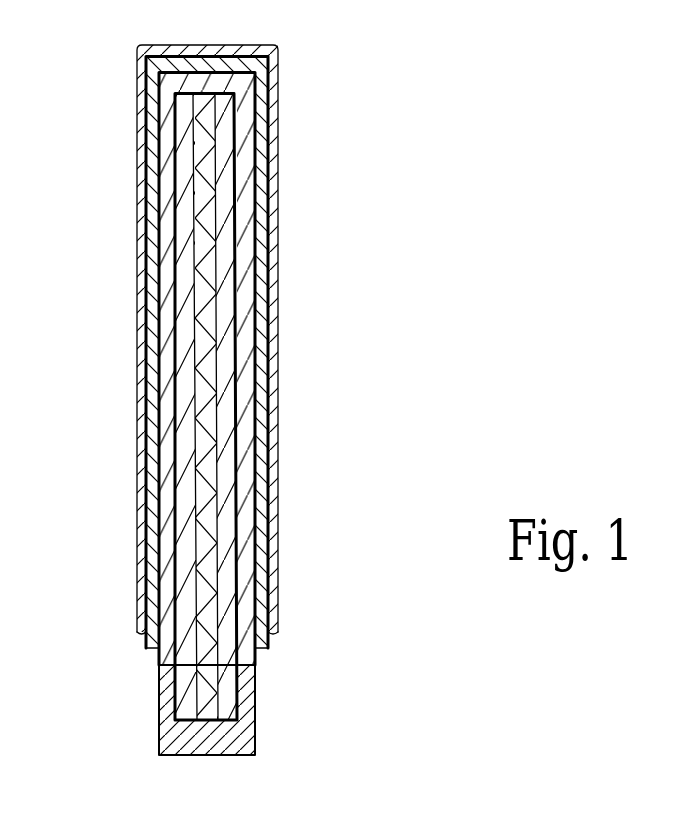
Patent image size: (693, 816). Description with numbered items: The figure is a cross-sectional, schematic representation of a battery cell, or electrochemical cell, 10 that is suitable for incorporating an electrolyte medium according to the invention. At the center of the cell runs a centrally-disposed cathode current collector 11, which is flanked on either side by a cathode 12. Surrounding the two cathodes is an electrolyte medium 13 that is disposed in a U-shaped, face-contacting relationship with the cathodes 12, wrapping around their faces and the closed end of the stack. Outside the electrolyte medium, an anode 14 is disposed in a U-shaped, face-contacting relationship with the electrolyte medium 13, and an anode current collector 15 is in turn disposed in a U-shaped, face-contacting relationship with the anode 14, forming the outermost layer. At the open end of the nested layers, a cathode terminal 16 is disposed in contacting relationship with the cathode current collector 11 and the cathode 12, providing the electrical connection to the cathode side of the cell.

The battery cell 10 is at (413, 85).
The cathode current collector 11 is at (205, 112).
The cathode 12 is at (178, 186).
The electrolyte medium 13 is at (167, 290).
The anode 14 is at (340, 330).
The anode current collector 15 is at (127, 433).
The cathode terminal 16 is at (250, 737).